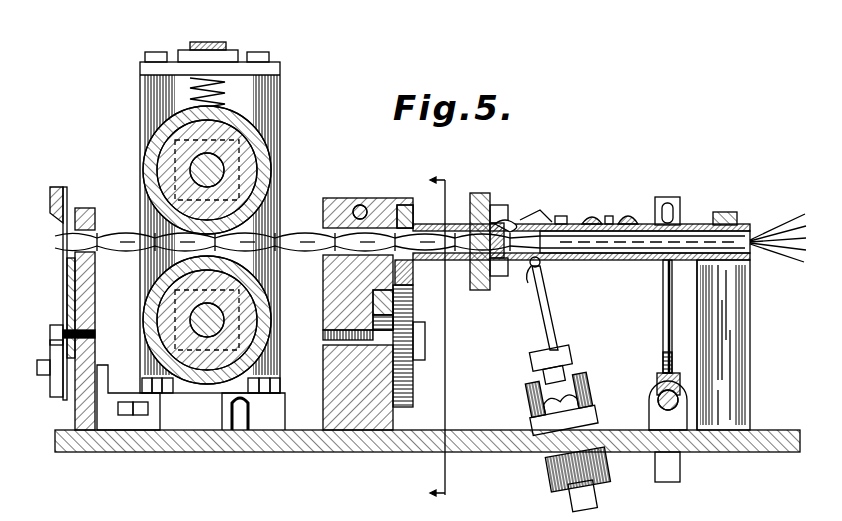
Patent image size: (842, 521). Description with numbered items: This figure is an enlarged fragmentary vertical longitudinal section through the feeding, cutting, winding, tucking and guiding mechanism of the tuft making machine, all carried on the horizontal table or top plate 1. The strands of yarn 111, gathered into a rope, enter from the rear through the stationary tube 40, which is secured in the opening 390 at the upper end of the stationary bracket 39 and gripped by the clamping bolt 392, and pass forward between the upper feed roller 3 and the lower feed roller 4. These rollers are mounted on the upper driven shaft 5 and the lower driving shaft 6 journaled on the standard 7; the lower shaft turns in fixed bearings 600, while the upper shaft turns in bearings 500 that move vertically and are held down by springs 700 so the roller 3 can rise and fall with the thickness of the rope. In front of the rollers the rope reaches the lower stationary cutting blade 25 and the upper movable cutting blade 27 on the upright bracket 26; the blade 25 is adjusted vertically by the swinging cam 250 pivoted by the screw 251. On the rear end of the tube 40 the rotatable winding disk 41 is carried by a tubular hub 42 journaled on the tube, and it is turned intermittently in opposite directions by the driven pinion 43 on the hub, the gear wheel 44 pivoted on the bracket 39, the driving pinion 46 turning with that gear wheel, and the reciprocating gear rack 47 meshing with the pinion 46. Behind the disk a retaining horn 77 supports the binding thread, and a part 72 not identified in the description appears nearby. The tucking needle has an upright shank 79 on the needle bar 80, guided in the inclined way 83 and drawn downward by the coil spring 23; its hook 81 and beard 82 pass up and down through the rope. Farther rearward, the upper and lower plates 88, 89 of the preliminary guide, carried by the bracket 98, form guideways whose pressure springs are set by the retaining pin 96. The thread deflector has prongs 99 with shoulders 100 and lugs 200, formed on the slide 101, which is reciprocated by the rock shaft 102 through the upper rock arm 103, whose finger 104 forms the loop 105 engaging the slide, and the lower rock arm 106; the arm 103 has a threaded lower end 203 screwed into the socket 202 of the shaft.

The table or top plate 1 is at (300, 453).
The upper feed roller 3 is at (162, 132).
The lower feed roller 4 is at (212, 388).
The upper driven shaft 5 is at (195, 166).
The lower driving shaft 6 is at (190, 385).
The standard 7 is at (548, 238).
The coil spring 23 is at (550, 467).
The lower stationary cutting blade 25 is at (95, 285).
The upright bracket 26 is at (88, 208).
The upper movable cutting blade 27 is at (57, 187).
The stationary bracket 39 is at (358, 422).
The stationary tube 40 is at (323, 262).
The winding disk 41 is at (476, 200).
The tubular hub 42 is at (432, 224).
The driven pinion 43 is at (405, 205).
The gear wheel 44 is at (408, 409).
The driving pinion 46 is at (323, 364).
The gear rack 47 is at (373, 302).
The bushing 72 is at (498, 276).
The retaining horn 77 is at (500, 222).
The upright shank 79 is at (557, 330).
The needle bar 80 is at (596, 496).
The bill or hook 81 is at (541, 264).
The guard or beard 82 is at (528, 283).
The inclined way 83 is at (562, 469).
The upper plate 88 is at (722, 248).
The lower plate 89 is at (742, 262).
The retaining pin 96 is at (628, 254).
The bracket 98 is at (742, 327).
The prong 99 is at (540, 218).
The shoulder 100 is at (560, 216).
The slide 101 is at (740, 218).
The rock shaft 102 is at (658, 400).
The upper rock arm 103 is at (667, 310).
The finger 104 is at (670, 210).
The loop or fork 105 is at (668, 197).
The lower rock arm 106 is at (680, 470).
The strands of yarn 111 is at (790, 262).
The lug 200 is at (592, 215).
The screw threaded socket 202 is at (680, 383).
The screw threaded lower end 203 is at (672, 362).
The cam 250 is at (80, 312).
The screw 251 is at (95, 334).
The opening 390 is at (338, 198).
The clamping bolt 392 is at (360, 205).
The bearings 500 is at (268, 145).
The bearings 600 is at (330, 316).
The springs 700 is at (222, 100).